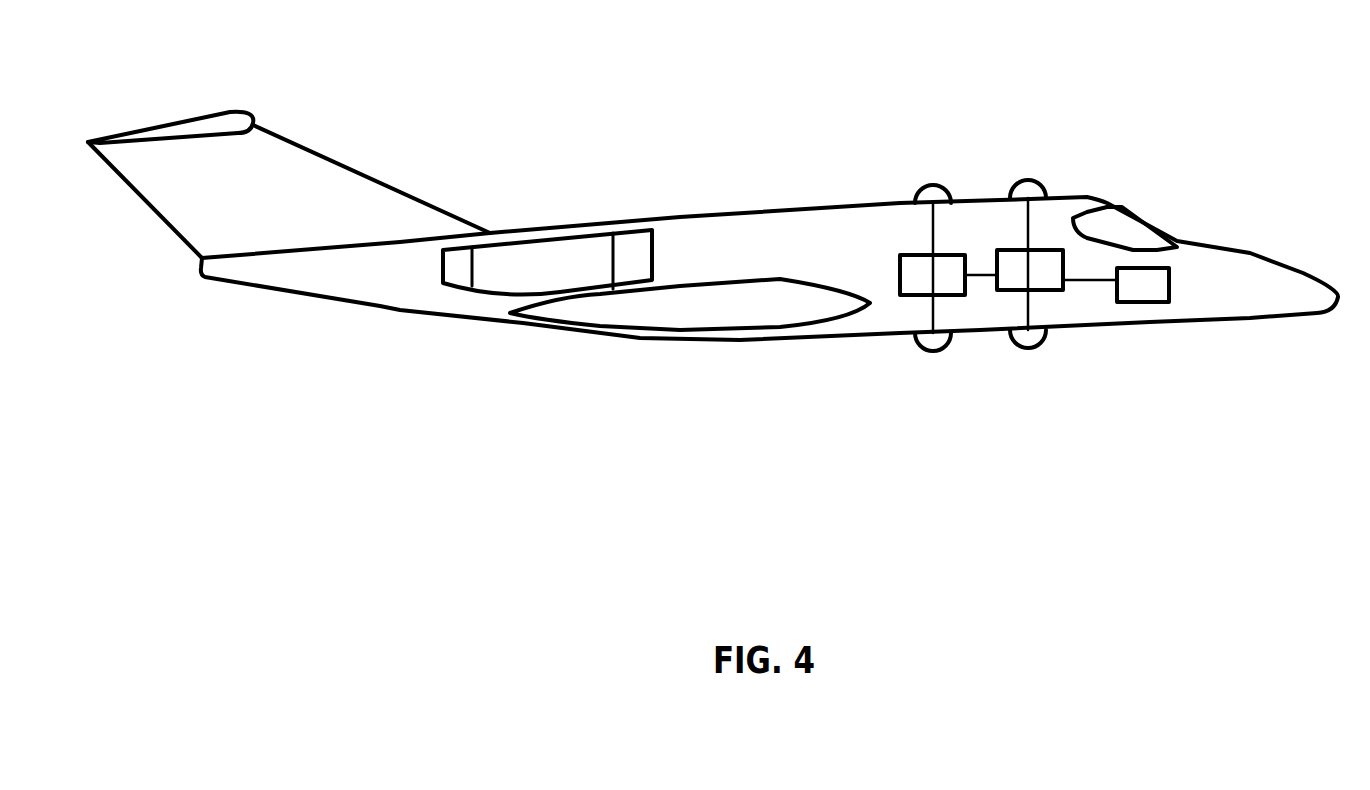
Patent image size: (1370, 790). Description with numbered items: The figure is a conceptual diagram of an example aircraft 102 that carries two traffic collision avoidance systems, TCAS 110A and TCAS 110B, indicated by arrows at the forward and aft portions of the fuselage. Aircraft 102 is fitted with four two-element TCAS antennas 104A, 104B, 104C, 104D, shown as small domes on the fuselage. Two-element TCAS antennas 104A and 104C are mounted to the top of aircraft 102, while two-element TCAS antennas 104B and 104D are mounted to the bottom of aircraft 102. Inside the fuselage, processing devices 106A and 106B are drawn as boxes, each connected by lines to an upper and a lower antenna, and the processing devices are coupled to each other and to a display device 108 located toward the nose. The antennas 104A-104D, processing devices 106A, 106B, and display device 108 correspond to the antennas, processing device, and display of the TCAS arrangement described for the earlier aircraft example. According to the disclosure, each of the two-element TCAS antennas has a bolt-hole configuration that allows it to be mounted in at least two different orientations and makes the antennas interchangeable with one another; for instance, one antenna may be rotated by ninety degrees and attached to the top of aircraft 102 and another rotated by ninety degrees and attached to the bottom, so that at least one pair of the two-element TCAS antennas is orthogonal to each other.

The aircraft 102 is at (1222, 82).
The two-element TCAS antenna 104A is at (1032, 183).
The two-element TCAS antenna 104B is at (1032, 347).
The two-element TCAS antenna 104C is at (936, 188).
The two-element TCAS antenna 104D is at (937, 350).
The processing device 106A is at (1027, 250).
The processing device 106B is at (900, 255).
The display device 108 is at (1158, 288).
The TCAS 110A is at (1205, 306).
The TCAS 110B is at (912, 322).